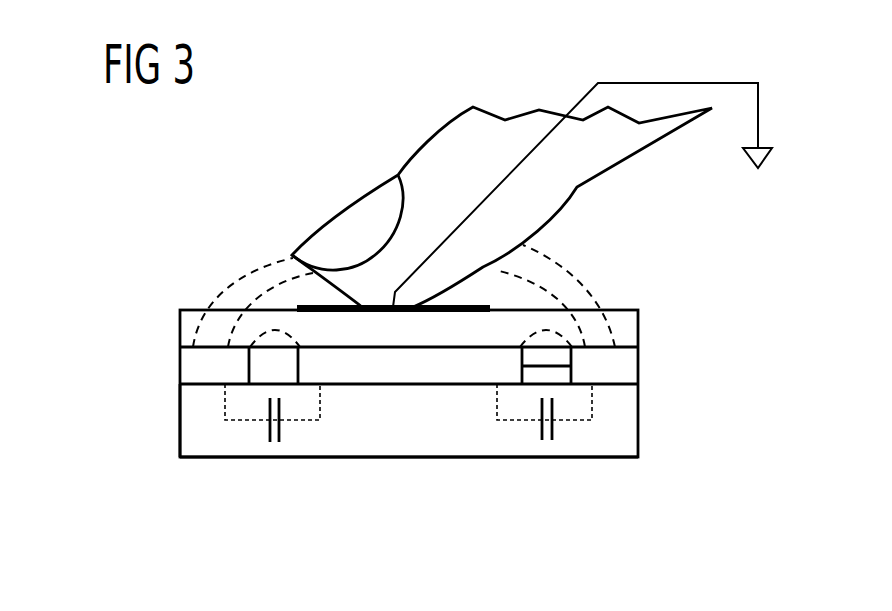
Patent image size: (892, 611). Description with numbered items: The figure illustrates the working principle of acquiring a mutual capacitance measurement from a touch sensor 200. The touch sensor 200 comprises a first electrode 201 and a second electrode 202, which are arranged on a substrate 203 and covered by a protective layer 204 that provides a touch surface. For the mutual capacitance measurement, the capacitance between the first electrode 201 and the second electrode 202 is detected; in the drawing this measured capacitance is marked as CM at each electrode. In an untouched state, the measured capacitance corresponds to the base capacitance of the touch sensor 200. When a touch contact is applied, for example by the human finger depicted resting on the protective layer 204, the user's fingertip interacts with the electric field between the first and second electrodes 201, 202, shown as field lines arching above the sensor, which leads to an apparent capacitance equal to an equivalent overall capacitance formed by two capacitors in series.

The touch sensor 200 is at (166, 286).
The first electrode 201 is at (408, 370).
The second electrode 202 is at (190, 368).
The substrate 203 is at (190, 423).
The protective layer 204 is at (630, 329).
The mutual capacitance CM is at (557, 430).